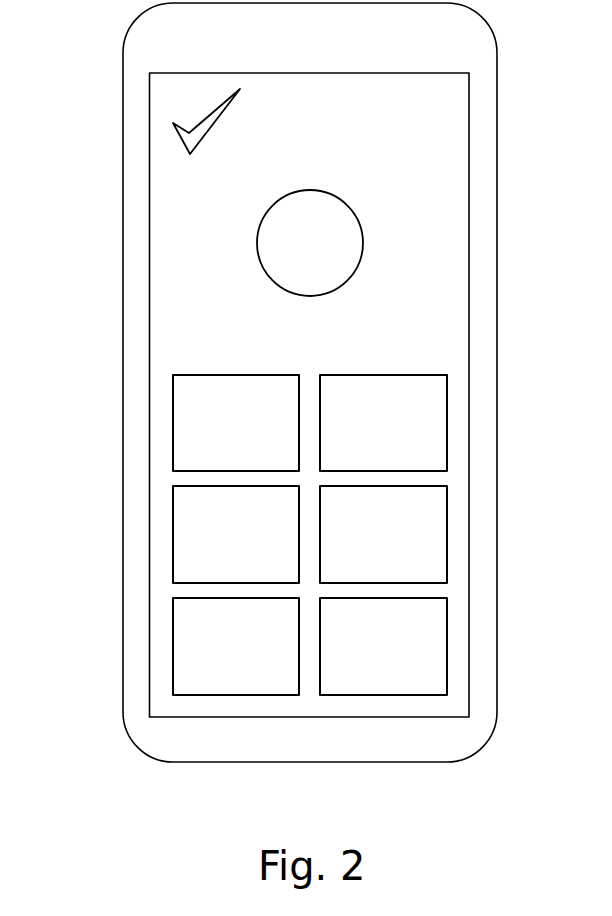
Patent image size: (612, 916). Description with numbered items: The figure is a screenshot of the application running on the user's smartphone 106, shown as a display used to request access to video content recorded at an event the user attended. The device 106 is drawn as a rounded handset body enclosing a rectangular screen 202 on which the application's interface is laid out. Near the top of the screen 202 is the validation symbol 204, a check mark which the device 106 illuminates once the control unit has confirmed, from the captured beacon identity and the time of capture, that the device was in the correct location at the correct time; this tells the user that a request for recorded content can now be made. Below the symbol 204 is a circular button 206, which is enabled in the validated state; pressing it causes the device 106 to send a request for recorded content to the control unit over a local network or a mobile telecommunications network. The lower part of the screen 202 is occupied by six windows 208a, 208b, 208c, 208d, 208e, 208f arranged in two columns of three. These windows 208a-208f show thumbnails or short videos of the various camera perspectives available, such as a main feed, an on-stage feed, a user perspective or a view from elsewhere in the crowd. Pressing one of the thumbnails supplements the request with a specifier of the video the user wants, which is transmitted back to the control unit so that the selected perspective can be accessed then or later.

The user device 106 is at (123, 653).
The display screen 202 is at (445, 72).
The validation symbol 204 is at (207, 120).
The button 206 is at (357, 219).
The window 208a is at (173, 440).
The window 208b is at (173, 540).
The window 208c is at (173, 634).
The window 208d is at (447, 434).
The window 208e is at (447, 533).
The window 208f is at (447, 628).